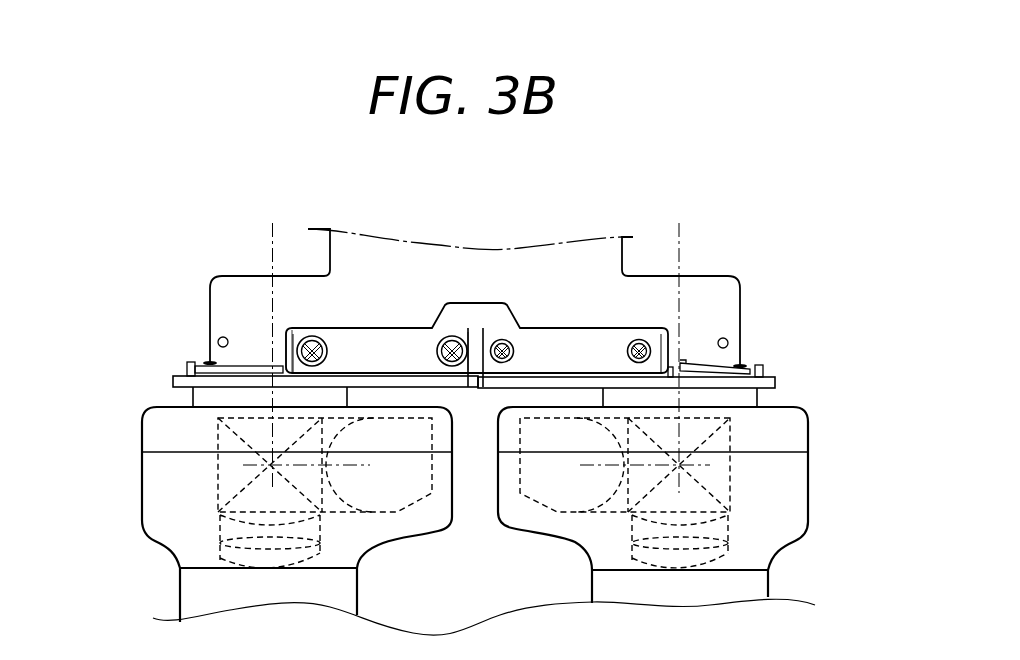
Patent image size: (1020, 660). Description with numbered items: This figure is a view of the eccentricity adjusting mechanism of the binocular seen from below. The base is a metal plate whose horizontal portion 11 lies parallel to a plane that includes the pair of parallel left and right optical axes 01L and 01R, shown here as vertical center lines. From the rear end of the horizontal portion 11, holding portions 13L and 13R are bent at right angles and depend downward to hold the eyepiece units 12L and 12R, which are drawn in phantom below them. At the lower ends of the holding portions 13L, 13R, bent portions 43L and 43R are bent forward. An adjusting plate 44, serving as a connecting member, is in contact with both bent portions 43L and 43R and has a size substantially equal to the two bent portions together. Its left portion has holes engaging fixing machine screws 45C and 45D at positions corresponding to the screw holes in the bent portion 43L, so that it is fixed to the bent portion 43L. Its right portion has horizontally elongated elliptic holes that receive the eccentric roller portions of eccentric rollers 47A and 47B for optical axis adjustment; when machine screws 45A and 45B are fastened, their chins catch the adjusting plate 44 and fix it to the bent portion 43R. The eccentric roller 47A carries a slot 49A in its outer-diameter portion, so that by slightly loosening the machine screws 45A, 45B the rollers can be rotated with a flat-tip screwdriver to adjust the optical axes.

The right optical axis 01R is at (270, 252).
The left optical axis 01L is at (681, 252).
The horizontal portion 11 is at (580, 247).
The right eyepiece unit 12R is at (141, 492).
The left eyepiece unit 12L is at (810, 493).
The right holding portion 13R is at (173, 380).
The left holding portion 13L is at (775, 382).
The right bent portion 43R is at (284, 343).
The left bent portion 43L is at (669, 348).
The adjusting plate 44 is at (610, 337).
The machine screw 45A is at (300, 340).
The machine screw 45B is at (444, 341).
The fixing machine screw 45C is at (505, 335).
The fixing machine screw 45D is at (651, 341).
The eccentric roller 47A is at (298, 338).
The eccentric roller 47B is at (461, 334).
The slot 49A is at (295, 333).